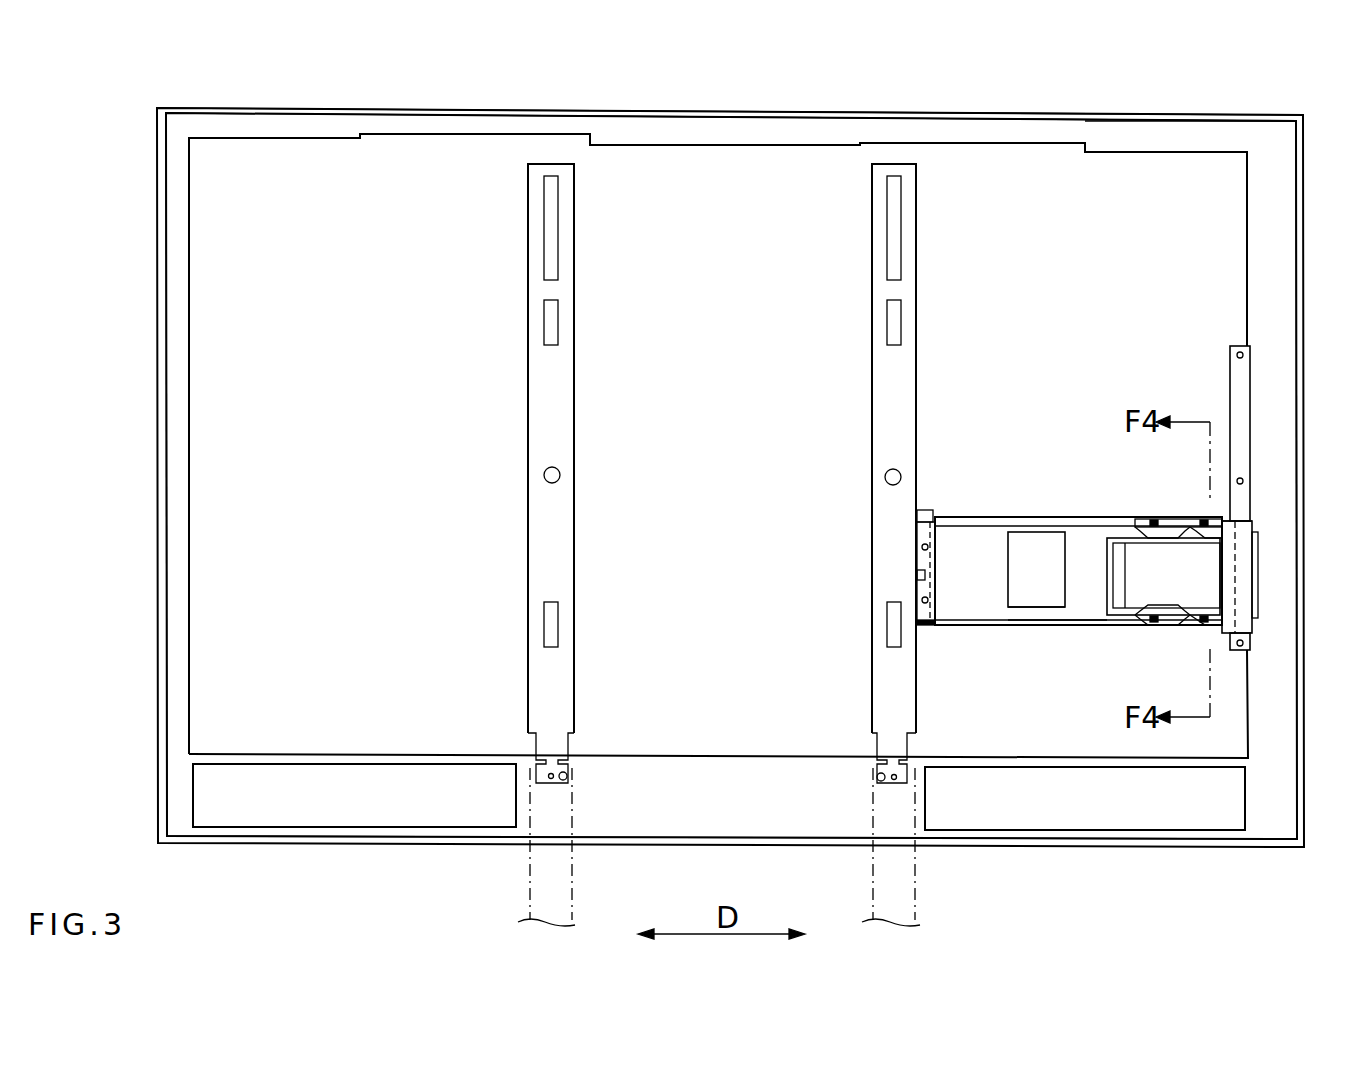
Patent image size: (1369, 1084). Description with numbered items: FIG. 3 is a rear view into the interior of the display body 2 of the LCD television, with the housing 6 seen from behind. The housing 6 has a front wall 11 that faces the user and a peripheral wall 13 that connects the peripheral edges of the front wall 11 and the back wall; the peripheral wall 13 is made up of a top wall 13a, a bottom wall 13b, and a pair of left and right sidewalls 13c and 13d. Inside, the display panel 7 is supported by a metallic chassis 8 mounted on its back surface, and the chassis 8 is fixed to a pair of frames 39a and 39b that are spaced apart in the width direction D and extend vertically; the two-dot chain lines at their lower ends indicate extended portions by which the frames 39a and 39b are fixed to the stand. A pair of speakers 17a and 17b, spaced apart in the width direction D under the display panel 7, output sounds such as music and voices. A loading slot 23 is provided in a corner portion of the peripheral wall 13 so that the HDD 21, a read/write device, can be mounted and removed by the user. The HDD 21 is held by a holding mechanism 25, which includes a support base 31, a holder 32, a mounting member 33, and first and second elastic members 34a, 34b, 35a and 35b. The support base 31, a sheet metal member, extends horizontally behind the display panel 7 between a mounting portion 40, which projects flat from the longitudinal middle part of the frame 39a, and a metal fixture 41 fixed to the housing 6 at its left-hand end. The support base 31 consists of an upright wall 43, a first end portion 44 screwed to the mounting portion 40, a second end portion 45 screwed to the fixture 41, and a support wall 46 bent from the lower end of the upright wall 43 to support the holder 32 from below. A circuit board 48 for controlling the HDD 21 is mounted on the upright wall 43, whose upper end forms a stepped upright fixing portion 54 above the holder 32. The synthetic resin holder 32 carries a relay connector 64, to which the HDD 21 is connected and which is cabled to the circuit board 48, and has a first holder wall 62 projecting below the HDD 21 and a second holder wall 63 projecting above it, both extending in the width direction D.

The display body 2 is at (1040, 104).
The housing 6 is at (620, 102).
The display panel 7 is at (823, 144).
The chassis 8 is at (728, 178).
The front wall 11 is at (282, 127).
The peripheral wall 13 is at (443, 110).
The top wall 13a is at (953, 110).
The bottom wall 13b is at (738, 843).
The sidewall 13c is at (1304, 450).
The sidewall 13d is at (158, 426).
The speaker 17a is at (1080, 817).
The speaker 17b is at (360, 815).
The HDD 21 is at (1165, 610).
The loading slot 23 is at (1258, 577).
The holding mechanism 25 is at (1080, 508).
The support base 31 is at (1011, 512).
The holder 32 is at (1108, 624).
The mounting member 33 is at (1162, 510).
The first elastic member 34a is at (1210, 636).
The first elastic member 34b is at (1140, 618).
The second elastic member 35a is at (1205, 525).
The second elastic member 35b is at (1140, 530).
The frame 39a is at (885, 426).
The frame 39b is at (566, 424).
The mounting portion 40 is at (925, 514).
The fixture 41 is at (1237, 385).
The upright wall 43 is at (965, 598).
The first end portion 44 is at (917, 580).
The second end portion 45 is at (1235, 530).
The support wall 46 is at (1050, 628).
The circuit board 48 is at (1022, 600).
The upright fixing portion 54 is at (1042, 525).
The first holder wall 62 is at (1190, 622).
The second holder wall 63 is at (1180, 545).
The relay connector 64 is at (1120, 575).